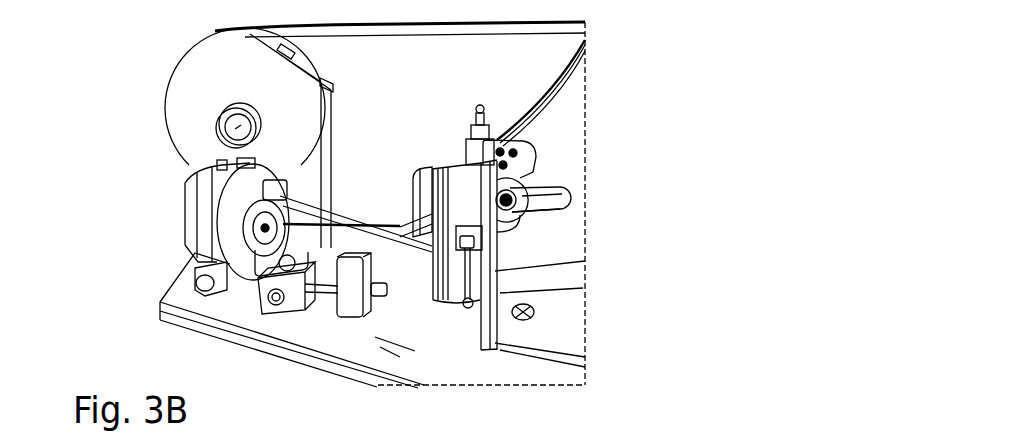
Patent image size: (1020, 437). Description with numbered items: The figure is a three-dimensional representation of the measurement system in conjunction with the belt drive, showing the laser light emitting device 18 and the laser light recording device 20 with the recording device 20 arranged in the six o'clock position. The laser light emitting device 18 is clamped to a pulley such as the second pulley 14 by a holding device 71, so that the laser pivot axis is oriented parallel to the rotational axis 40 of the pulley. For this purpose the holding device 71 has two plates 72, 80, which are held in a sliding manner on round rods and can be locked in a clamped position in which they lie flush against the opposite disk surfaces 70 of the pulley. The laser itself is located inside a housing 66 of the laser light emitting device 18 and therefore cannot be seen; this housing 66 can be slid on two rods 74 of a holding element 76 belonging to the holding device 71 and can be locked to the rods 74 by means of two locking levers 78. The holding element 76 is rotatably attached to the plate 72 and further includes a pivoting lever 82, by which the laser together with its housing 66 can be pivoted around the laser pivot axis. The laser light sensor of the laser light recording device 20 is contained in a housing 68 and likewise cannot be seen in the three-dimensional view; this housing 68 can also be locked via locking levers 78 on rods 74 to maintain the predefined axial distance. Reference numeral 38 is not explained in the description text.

The second pulley 14 is at (573, 108).
The laser light emitting device 18 is at (468, 173).
The laser light recording device 20 is at (178, 230).
The tape 38 is at (347, 216).
The rotational axis 40 is at (222, 141).
The housing 66 is at (445, 230).
The housing 68 is at (185, 197).
The disk surfaces 70 is at (193, 95).
The holding device 71 is at (532, 135).
The plate 72 is at (532, 150).
The rods 74 is at (468, 258).
The holding element 76 is at (545, 218).
The locking levers 78 is at (491, 303).
The plate 80 is at (490, 125).
The pivoting lever 82 is at (560, 203).